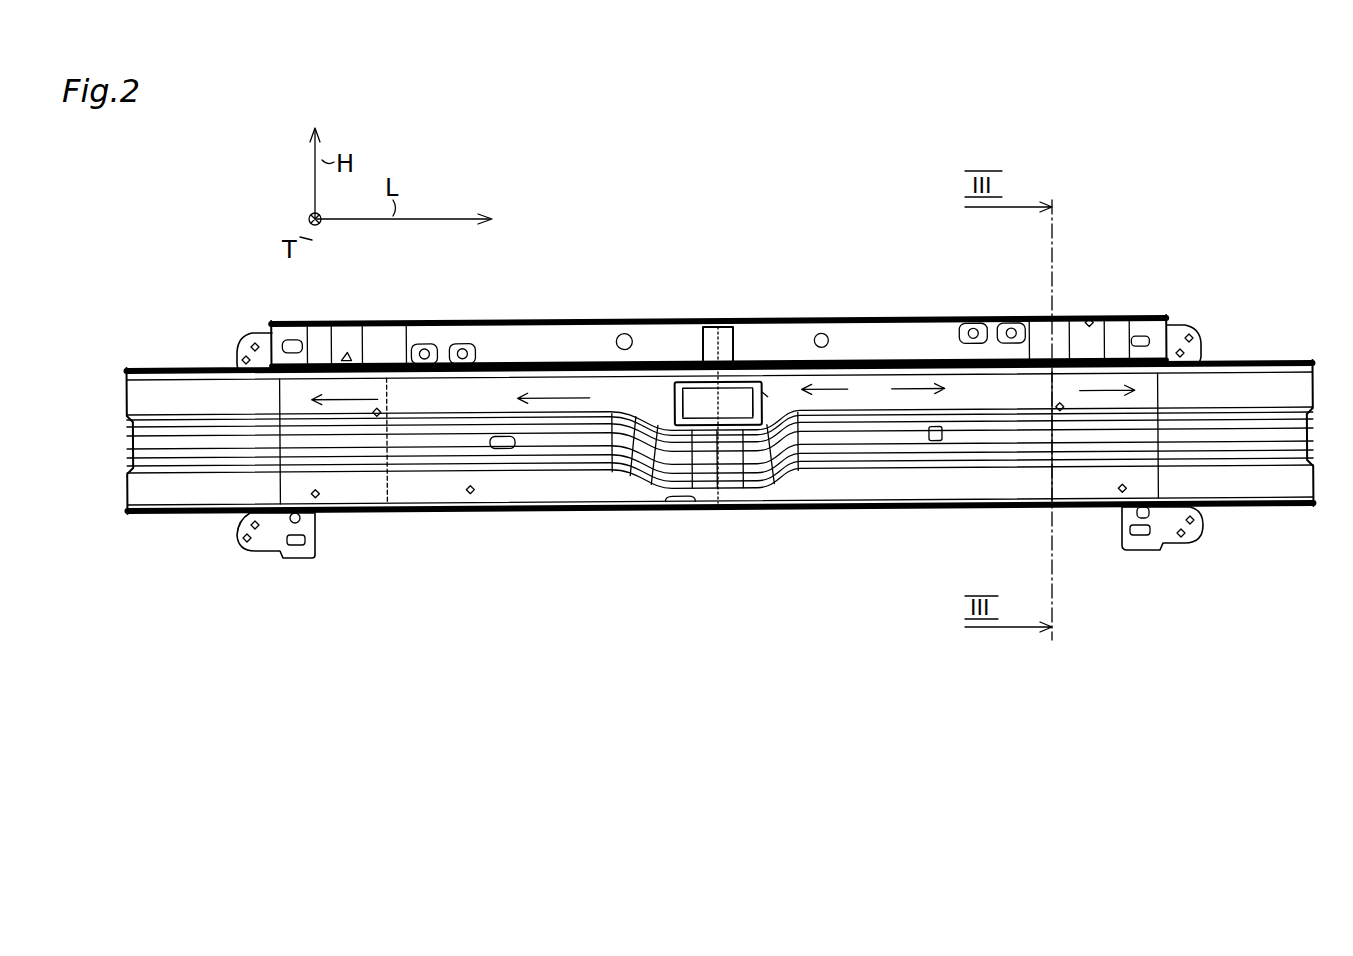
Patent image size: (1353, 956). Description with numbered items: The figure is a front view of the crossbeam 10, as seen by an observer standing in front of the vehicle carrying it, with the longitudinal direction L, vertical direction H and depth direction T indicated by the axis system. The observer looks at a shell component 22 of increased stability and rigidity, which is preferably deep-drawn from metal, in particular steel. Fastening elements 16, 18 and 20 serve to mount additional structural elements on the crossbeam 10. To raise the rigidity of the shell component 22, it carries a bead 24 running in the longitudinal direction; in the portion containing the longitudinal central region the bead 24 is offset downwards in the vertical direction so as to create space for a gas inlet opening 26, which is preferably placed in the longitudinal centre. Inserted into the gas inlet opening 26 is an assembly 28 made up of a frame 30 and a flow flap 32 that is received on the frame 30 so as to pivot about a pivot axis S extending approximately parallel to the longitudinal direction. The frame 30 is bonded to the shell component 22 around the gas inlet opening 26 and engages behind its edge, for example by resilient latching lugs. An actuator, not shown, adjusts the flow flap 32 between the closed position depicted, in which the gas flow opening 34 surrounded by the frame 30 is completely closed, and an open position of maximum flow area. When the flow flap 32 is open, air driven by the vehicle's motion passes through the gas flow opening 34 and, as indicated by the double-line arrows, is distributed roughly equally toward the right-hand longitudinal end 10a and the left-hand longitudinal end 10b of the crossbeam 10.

The crossbeam 10 is at (720, 493).
The right-hand longitudinal end 10a is at (163, 336).
The left-hand longitudinal end 10b is at (1292, 336).
The fastening element 16 is at (268, 535).
The fastening element 18 is at (1160, 537).
The fastening element 20 is at (658, 342).
The shell component 22 is at (922, 490).
The bead 24 is at (852, 438).
The gas inlet opening 26 is at (873, 388).
The assembly 28 is at (757, 366).
The frame 30 is at (672, 407).
The flow flap 32 is at (733, 405).
The gas flow opening 34 is at (702, 405).